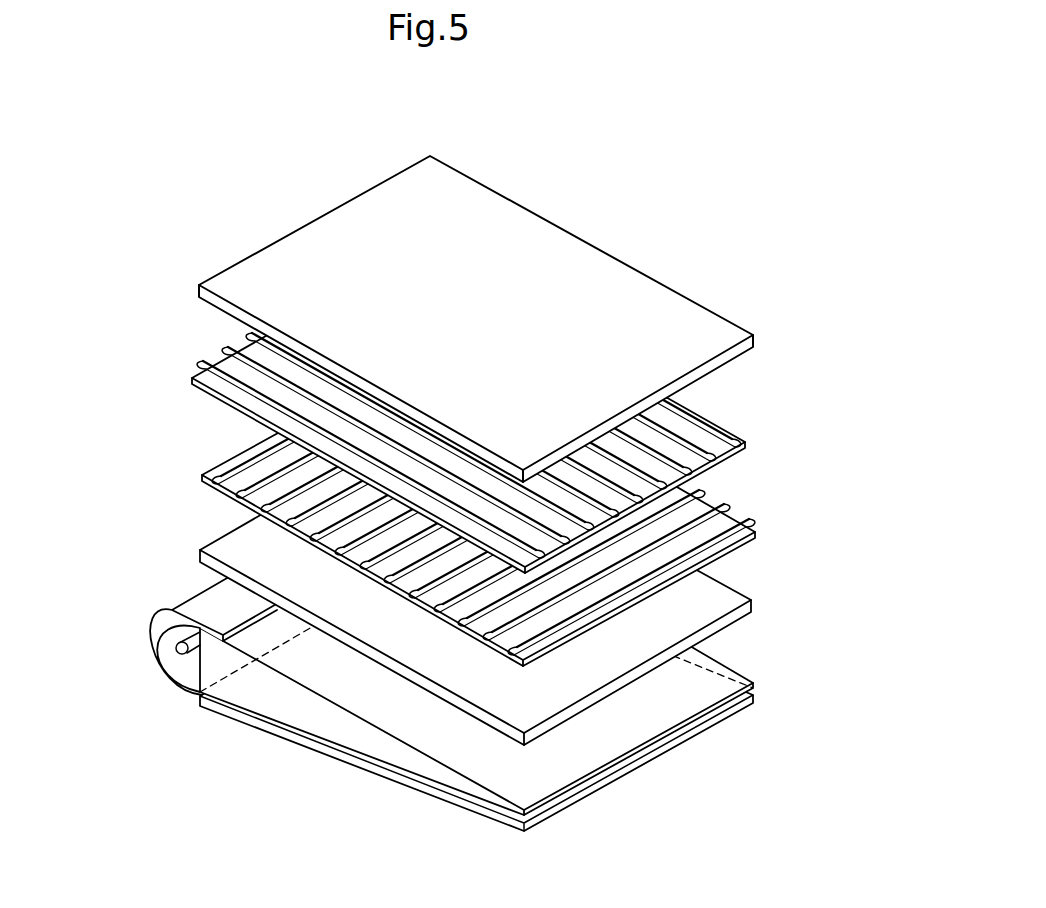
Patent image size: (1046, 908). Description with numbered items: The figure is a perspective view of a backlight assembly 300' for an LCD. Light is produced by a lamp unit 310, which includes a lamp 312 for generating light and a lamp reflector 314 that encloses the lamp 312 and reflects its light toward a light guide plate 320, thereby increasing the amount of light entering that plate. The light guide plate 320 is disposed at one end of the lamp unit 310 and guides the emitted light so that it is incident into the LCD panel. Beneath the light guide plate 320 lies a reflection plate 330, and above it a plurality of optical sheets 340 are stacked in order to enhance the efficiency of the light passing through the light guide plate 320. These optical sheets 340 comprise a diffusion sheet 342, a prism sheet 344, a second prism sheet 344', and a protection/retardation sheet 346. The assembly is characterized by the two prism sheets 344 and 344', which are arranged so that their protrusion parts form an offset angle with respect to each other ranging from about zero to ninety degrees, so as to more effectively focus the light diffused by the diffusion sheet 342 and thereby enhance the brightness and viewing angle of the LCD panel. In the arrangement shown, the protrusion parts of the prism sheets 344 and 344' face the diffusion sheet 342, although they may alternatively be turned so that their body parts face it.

The backlight assembly 300' is at (525, 459).
The lamp unit 310 is at (92, 652).
The lamp 312 is at (176, 648).
The lamp reflector 314 is at (170, 681).
The light guide plate 320 is at (722, 662).
The reflection plate 330 is at (717, 718).
The optical sheets 340 is at (870, 330).
The diffusion sheet 342 is at (751, 600).
The prism sheet 344 is at (537, 506).
The second prism sheet 344' is at (520, 411).
The protection/retardation sheet 346 is at (756, 334).